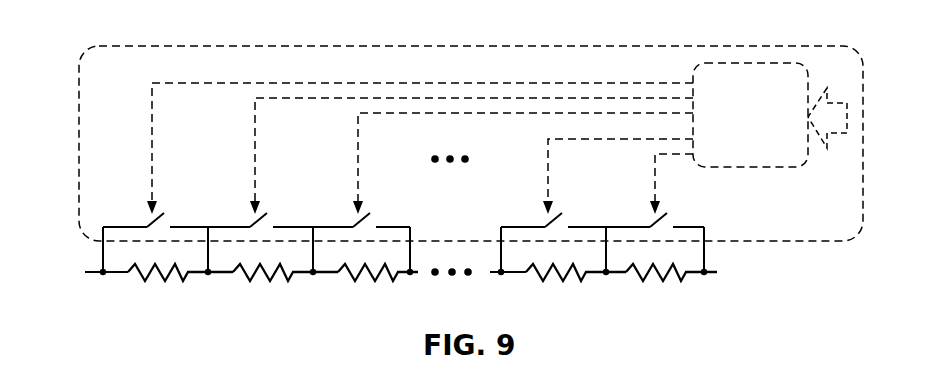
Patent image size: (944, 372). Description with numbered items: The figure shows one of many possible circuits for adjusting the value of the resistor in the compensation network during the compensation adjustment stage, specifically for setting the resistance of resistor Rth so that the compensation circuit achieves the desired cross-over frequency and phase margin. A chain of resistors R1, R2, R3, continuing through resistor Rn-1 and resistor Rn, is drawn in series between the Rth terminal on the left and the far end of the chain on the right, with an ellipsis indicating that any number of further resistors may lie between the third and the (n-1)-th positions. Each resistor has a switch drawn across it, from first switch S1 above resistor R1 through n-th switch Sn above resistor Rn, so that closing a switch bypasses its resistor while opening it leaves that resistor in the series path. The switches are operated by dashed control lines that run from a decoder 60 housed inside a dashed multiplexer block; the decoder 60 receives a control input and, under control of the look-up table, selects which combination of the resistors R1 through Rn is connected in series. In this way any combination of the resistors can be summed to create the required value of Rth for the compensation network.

The decoder 60 is at (787, 64).
The first switch S1 is at (159, 216).
The n-th switch Sn is at (652, 222).
The resistor Rth is at (88, 272).
The first resistor R1 is at (180, 288).
The second resistor R2 is at (285, 288).
The third resistor R3 is at (378, 288).
The (n-1)-th resistor Rn-1 is at (576, 288).
The n-th resistor Rn is at (671, 288).